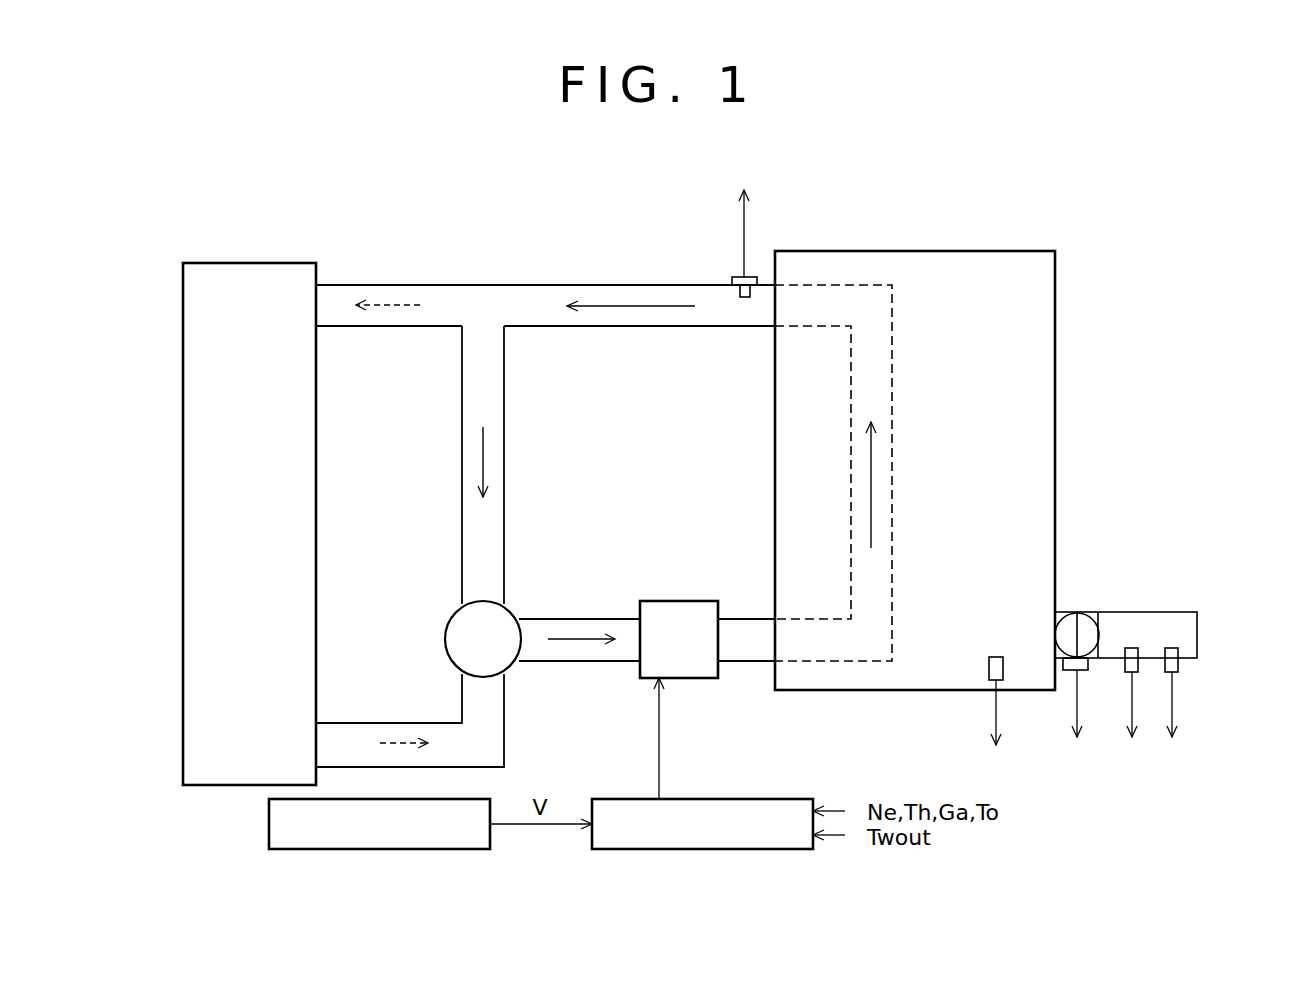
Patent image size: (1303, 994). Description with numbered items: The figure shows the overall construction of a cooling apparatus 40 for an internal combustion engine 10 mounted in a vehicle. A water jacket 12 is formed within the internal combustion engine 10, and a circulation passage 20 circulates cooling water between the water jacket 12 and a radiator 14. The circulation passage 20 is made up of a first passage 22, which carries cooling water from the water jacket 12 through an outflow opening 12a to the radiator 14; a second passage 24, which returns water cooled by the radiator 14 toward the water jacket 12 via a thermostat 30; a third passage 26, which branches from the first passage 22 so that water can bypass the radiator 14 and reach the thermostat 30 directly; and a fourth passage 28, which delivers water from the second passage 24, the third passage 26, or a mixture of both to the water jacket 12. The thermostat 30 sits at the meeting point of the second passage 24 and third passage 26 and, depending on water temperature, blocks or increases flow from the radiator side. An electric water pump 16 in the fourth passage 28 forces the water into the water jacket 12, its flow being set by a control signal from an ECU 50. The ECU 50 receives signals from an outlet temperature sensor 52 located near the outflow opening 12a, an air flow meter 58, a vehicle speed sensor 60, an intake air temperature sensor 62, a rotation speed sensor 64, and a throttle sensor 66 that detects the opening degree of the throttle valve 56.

The internal combustion engine 10 is at (1020, 251).
The water jacket 12 is at (893, 310).
The outflow opening 12a is at (829, 285).
The radiator 14 is at (250, 262).
The electric water pump 16 is at (698, 680).
The circulation passage 20 is at (540, 271).
The first passage 22 is at (637, 284).
The second passage 24 is at (505, 743).
The third passage 26 is at (461, 467).
The fourth passage 28 is at (580, 663).
The thermostat 30 is at (445, 639).
The cooling apparatus 40 is at (616, 192).
The ECU 50 is at (703, 852).
The outlet temperature sensor 52 is at (735, 277).
The throttle valve 56 is at (1085, 620).
The air flow meter 58 is at (1126, 675).
The vehicle speed sensor 60 is at (382, 852).
The intake air temperature sensor 62 is at (1176, 675).
The rotation speed sensor 64 is at (996, 657).
The throttle sensor 66 is at (1072, 672).